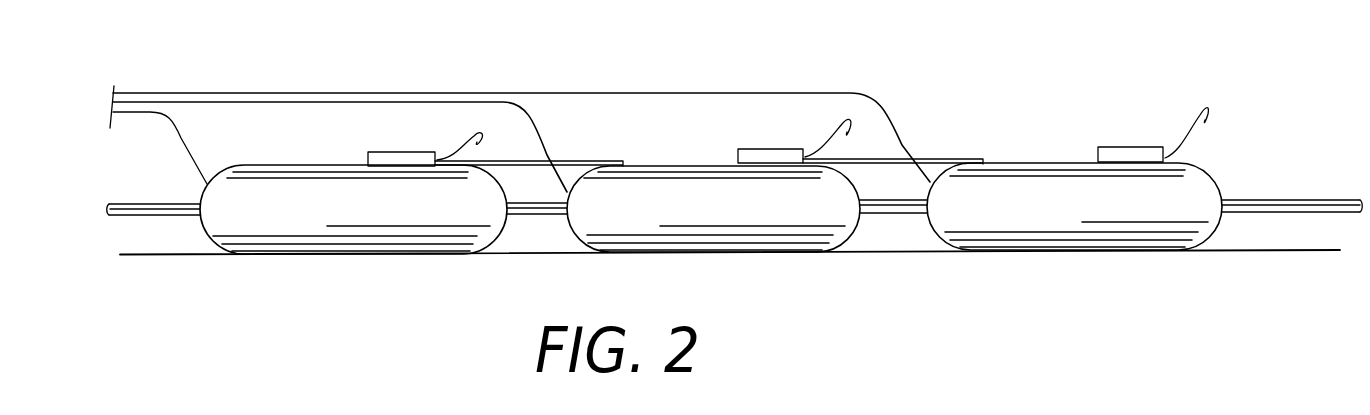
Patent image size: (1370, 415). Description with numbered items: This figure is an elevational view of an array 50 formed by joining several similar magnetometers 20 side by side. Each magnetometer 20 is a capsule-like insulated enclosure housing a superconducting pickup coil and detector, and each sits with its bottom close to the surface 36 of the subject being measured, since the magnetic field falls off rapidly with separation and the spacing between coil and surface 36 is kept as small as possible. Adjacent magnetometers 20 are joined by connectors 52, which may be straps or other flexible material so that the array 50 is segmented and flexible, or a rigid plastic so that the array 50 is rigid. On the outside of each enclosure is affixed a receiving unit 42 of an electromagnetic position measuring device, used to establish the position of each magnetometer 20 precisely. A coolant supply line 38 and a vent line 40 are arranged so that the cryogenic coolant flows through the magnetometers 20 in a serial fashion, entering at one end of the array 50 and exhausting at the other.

The magnetometer 20 is at (301, 155).
The surface 36 is at (1283, 248).
The coolant supply line 38 is at (1317, 202).
The vent line 40 is at (137, 210).
The receiving unit 42 is at (394, 158).
The array 50 is at (227, 86).
The connectors 52 is at (520, 167).